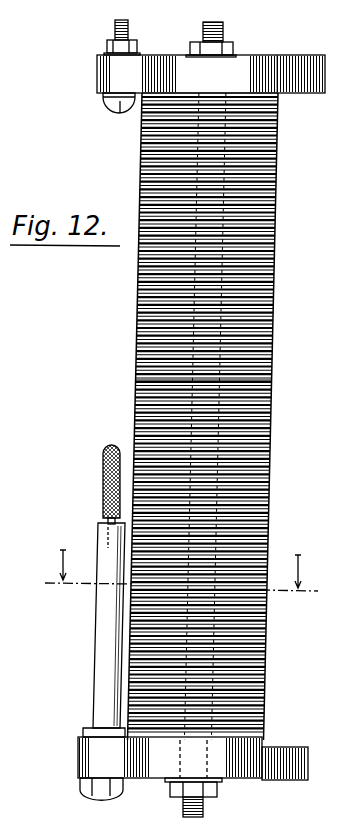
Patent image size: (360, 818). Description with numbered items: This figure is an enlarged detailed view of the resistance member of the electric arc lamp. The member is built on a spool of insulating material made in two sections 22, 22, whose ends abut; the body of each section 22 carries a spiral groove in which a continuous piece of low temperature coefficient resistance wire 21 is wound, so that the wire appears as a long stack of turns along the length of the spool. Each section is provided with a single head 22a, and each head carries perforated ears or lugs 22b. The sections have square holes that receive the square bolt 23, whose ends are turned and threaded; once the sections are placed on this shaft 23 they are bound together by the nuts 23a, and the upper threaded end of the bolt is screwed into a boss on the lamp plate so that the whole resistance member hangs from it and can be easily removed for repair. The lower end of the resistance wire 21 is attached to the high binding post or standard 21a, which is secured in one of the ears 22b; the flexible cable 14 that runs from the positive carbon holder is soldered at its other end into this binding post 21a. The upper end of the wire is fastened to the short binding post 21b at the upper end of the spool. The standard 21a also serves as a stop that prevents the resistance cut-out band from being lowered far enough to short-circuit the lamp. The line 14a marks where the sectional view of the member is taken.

The flexible cable 14 is at (104, 491).
The section line 14a is at (181, 579).
The resistance wire 21 is at (272, 378).
The high binding post 21a is at (96, 680).
The short binding post 21b is at (106, 99).
The spool section 22 is at (272, 248).
The head 22a is at (245, 762).
The perforated ear 22b is at (290, 760).
The square bolt 23 is at (222, 34).
The nut 23a is at (232, 46).